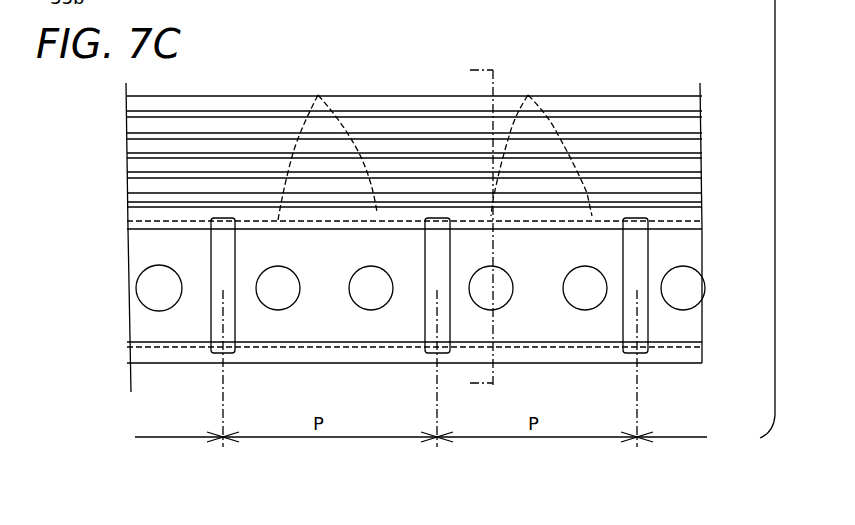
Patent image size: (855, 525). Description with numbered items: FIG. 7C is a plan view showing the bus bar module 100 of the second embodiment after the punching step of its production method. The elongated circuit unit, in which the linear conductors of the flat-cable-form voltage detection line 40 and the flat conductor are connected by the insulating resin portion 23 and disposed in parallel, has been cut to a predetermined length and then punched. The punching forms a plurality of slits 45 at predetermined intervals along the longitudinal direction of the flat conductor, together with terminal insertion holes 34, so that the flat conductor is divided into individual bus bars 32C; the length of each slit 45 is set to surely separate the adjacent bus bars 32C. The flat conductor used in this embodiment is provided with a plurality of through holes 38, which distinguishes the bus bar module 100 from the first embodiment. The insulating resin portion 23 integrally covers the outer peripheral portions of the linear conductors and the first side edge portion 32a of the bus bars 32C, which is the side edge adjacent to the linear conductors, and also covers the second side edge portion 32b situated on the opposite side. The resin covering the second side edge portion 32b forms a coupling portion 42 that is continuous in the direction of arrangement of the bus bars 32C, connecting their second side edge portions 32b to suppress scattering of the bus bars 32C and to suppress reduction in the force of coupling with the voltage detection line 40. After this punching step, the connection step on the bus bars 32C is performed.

The bus bar module 100 is at (462, 58).
The slit 45 is at (219, 245).
The through hole 38 is at (318, 95).
The insulating resin portion 23 is at (574, 98).
The voltage detection line 40 is at (712, 96).
The coupling portion 42 is at (712, 342).
The first side edge portion 32a is at (183, 220).
The second side edge portion 32b is at (250, 348).
The bus bar 32C is at (172, 328).
The terminal insertion hole 34 is at (178, 268).